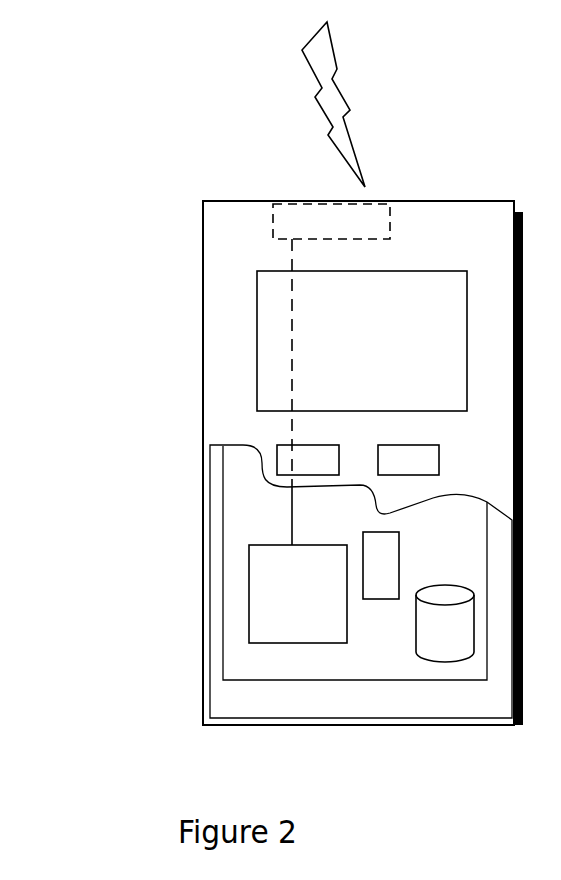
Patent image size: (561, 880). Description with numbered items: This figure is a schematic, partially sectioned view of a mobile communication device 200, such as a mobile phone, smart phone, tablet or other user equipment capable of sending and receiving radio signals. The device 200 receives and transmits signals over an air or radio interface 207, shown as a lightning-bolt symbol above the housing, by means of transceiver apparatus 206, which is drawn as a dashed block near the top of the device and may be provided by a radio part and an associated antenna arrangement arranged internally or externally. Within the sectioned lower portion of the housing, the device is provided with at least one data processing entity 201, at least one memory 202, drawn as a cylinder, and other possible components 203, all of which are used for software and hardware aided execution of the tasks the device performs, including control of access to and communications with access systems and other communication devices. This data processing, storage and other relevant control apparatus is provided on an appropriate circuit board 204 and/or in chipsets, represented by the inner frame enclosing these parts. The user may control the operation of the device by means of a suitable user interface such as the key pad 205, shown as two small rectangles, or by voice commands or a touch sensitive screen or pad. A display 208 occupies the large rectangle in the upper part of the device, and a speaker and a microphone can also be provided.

The portable electronic device 200 is at (203, 244).
The data processing entity 201 is at (257, 577).
The memory 202 is at (438, 636).
The other possible components 203 is at (382, 550).
The circuit board 204 is at (248, 663).
The key pad 205 is at (282, 461).
The transceiver apparatus 206 is at (380, 217).
The air or radio interface 207 is at (364, 131).
The display 208 is at (273, 326).